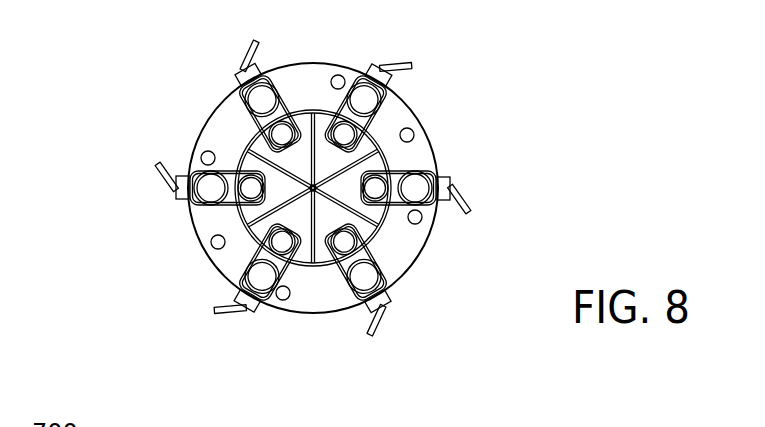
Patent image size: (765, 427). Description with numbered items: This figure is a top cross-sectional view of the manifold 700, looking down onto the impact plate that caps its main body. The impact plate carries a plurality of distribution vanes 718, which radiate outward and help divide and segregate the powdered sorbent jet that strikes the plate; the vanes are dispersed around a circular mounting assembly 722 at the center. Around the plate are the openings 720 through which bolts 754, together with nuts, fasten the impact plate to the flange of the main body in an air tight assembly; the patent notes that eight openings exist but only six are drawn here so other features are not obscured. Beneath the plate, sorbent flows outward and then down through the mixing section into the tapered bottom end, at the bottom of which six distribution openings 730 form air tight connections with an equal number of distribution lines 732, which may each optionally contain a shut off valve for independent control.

The manifold 700 is at (188, 60).
The distribution vanes 718 is at (340, 118).
The openings 720 is at (366, 92).
The circular mounting assembly 722 is at (318, 310).
The distribution openings 730 is at (255, 70).
The distribution lines 732 is at (240, 58).
The bolts 754 is at (175, 426).